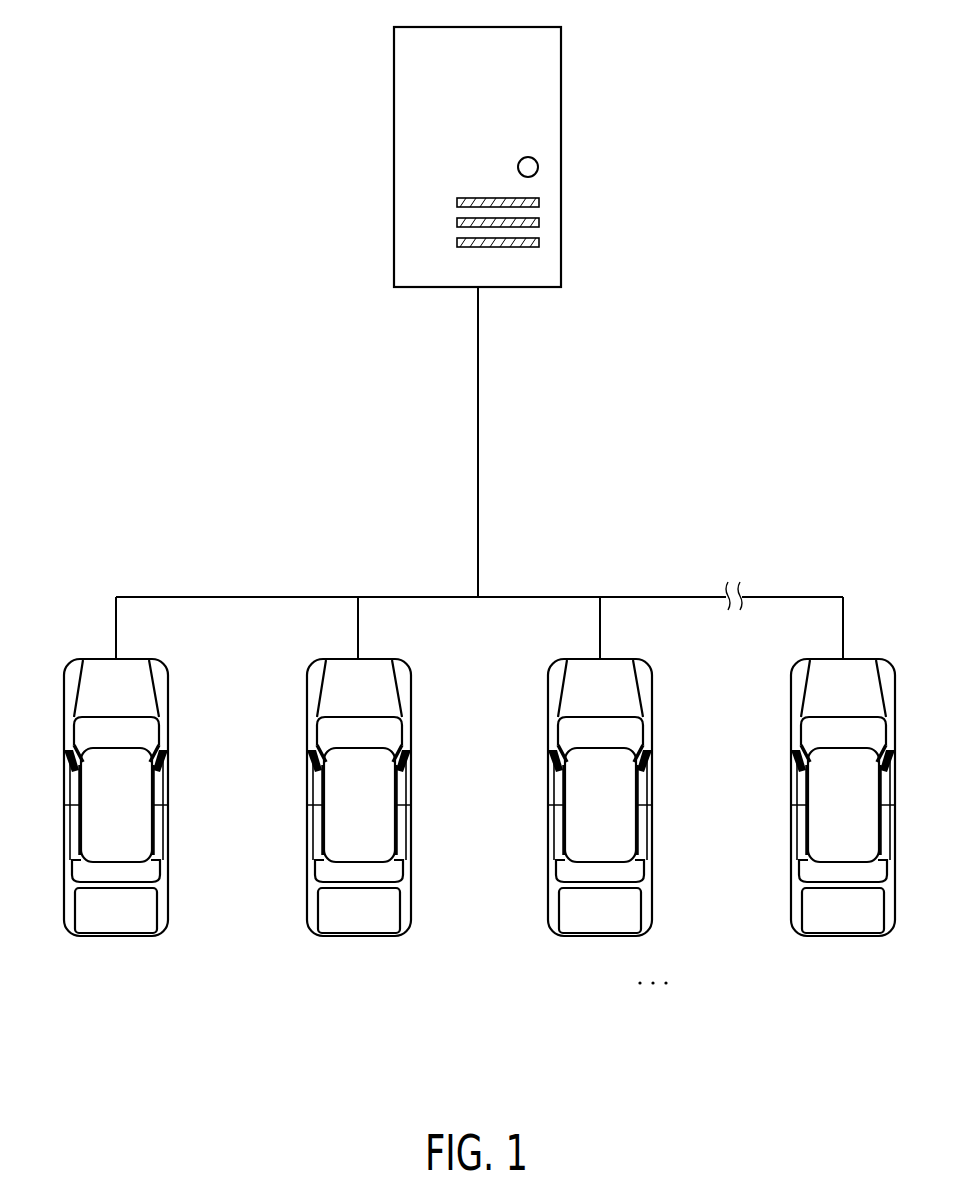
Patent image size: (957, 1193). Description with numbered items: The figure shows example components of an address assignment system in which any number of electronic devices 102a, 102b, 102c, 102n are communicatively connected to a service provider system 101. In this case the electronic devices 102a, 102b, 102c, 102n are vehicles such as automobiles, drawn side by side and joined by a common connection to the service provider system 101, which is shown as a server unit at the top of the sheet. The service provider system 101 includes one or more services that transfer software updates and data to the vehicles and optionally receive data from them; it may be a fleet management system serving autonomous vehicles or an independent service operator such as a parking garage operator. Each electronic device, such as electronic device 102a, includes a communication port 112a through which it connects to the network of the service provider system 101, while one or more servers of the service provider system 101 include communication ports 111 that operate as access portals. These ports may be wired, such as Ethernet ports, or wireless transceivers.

The service provider system 101 is at (395, 158).
The communication ports 111 is at (509, 303).
The communication port 112a is at (98, 636).
The electronic device 102a is at (70, 926).
The electronic device 102b is at (313, 926).
The electronic device 102c is at (555, 926).
The electronic device 102n is at (797, 926).